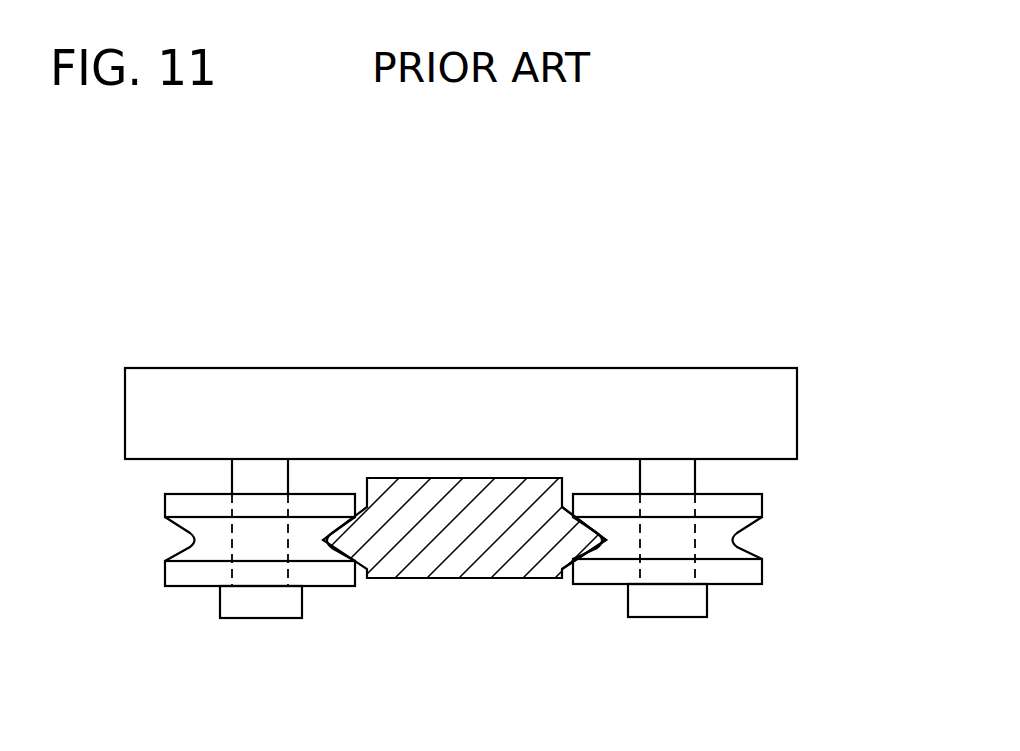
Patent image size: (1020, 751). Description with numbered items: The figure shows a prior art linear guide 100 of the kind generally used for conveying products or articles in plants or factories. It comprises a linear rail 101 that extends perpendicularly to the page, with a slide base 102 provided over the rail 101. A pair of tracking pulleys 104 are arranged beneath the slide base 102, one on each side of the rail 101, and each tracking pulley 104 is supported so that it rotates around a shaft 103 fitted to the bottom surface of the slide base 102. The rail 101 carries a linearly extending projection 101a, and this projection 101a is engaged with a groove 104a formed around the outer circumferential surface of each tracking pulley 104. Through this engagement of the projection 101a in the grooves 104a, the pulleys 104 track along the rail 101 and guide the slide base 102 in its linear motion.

The linear guide 100 is at (628, 273).
The linear rail 101 is at (440, 572).
The projection 101a is at (578, 545).
The slide base 102 is at (323, 380).
The shaft 103 is at (682, 480).
The tracking pulley 104 is at (524, 559).
The groove 104a is at (746, 551).